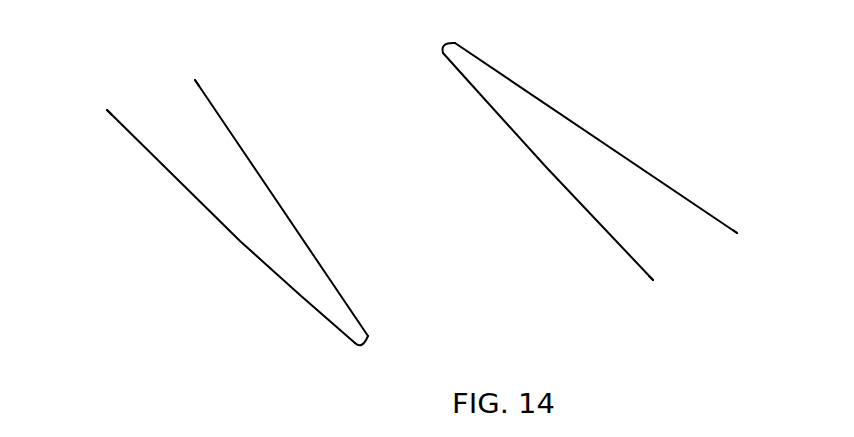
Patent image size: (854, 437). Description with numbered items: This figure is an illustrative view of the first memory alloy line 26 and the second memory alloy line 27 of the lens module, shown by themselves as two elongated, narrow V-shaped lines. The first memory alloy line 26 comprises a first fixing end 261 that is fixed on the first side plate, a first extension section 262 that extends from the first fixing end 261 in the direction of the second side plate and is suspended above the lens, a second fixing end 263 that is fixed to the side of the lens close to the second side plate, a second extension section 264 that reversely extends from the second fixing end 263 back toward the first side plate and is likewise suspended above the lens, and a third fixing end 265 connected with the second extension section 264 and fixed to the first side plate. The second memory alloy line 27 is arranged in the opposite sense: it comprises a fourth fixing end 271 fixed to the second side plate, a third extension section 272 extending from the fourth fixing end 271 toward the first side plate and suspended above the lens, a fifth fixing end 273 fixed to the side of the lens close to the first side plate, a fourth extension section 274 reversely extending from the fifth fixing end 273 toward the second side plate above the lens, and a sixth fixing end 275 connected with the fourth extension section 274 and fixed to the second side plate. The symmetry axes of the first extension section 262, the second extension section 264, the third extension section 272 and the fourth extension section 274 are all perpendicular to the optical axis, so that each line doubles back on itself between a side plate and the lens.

The first memory alloy line 26 is at (589, 165).
The first fixing end 261 is at (737, 233).
The first extension section 262 is at (602, 143).
The second fixing end 263 is at (441, 47).
The second extension section 264 is at (545, 168).
The third fixing end 265 is at (653, 280).
The second memory alloy line 27 is at (241, 228).
The fourth fixing end 271 is at (195, 80).
The third extension section 272 is at (273, 193).
The fifth fixing end 273 is at (362, 348).
The fourth extension section 274 is at (210, 215).
The sixth fixing end 275 is at (107, 110).